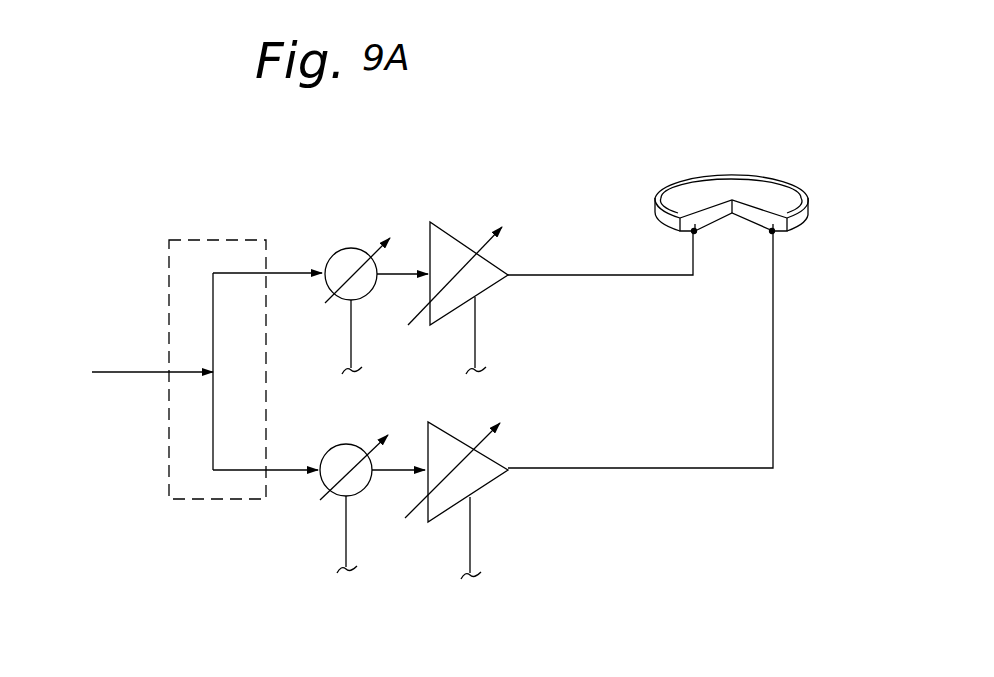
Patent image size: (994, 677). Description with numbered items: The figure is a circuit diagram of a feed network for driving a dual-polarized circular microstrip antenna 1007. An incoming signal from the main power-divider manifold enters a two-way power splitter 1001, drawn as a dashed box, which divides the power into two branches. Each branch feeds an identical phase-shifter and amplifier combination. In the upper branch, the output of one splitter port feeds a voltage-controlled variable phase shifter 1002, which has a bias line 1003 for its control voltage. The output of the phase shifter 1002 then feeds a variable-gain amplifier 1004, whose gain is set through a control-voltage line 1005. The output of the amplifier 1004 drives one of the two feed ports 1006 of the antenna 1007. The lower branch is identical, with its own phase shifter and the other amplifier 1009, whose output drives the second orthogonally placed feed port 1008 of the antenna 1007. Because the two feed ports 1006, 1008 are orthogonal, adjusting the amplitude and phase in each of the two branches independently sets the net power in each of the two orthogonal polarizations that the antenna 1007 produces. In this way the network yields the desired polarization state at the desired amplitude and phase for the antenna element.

The two-way power splitter 1001 is at (169, 250).
The voltage-controlled variable phase shifter 1002 is at (329, 262).
The bias line 1003 is at (347, 335).
The variable-gain amplifier 1004 is at (427, 242).
The control-voltage line 1005 is at (475, 330).
The feed port 1006 is at (693, 258).
The dual-polarized circular microstrip antenna 1007 is at (660, 193).
The second orthogonally placed feed port 1008 is at (774, 279).
The other amplifier 1009 is at (493, 482).